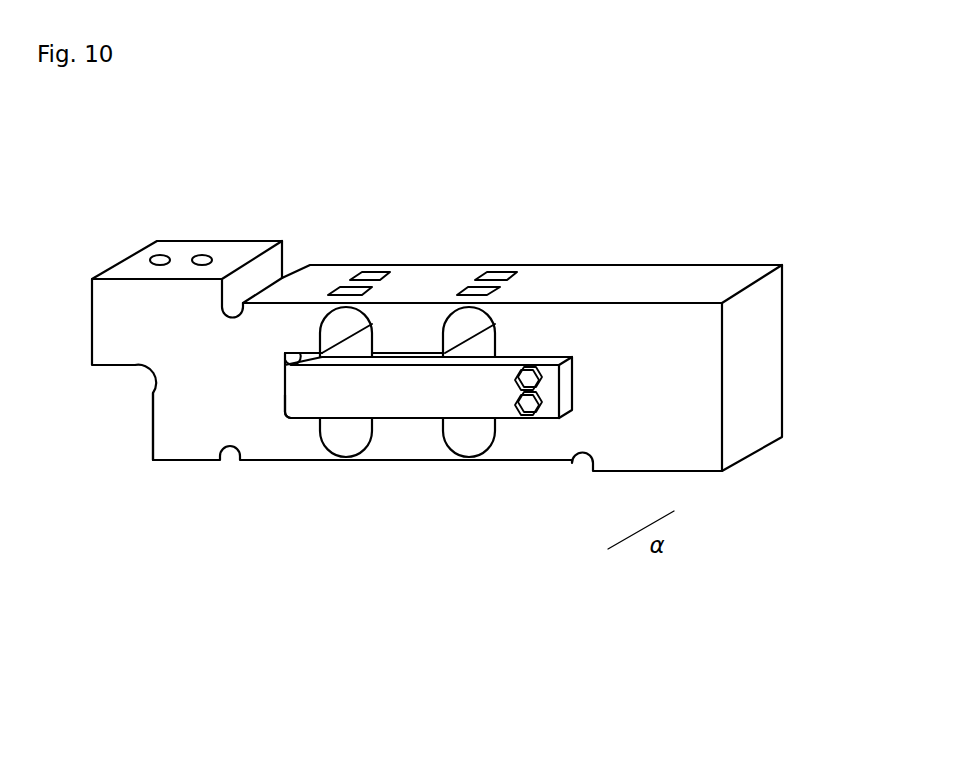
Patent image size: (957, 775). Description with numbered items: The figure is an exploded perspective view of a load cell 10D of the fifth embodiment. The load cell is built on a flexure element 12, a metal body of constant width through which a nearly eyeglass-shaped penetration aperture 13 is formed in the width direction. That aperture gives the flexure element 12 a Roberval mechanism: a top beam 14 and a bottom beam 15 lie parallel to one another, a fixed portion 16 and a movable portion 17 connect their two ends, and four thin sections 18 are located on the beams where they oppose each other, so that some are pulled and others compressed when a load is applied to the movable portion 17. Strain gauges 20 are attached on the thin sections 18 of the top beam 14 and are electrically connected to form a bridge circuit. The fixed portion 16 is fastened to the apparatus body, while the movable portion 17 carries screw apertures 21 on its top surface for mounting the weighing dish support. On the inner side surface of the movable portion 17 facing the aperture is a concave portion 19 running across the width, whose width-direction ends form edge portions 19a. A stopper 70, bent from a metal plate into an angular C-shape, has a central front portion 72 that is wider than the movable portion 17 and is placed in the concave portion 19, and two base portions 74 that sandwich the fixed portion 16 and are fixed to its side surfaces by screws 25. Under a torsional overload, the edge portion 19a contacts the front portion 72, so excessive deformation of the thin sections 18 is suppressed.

The load cell 10D is at (546, 224).
The flexure element 12 is at (436, 265).
The penetration aperture 13 is at (352, 441).
The top beam 14 is at (416, 330).
The bottom beam 15 is at (393, 440).
The fixed portion 16 is at (688, 365).
The movable portion 17 is at (212, 362).
The thin sections 18 is at (341, 303).
The concave portion 19 is at (283, 388).
The edge portion 19a is at (286, 352).
The strain gauges 20 is at (378, 276).
The screw apertures 21 is at (208, 257).
The screws 25 is at (533, 376).
The stopper 70 is at (422, 424).
The front portion 72 is at (297, 413).
The base portions 74 is at (517, 420).